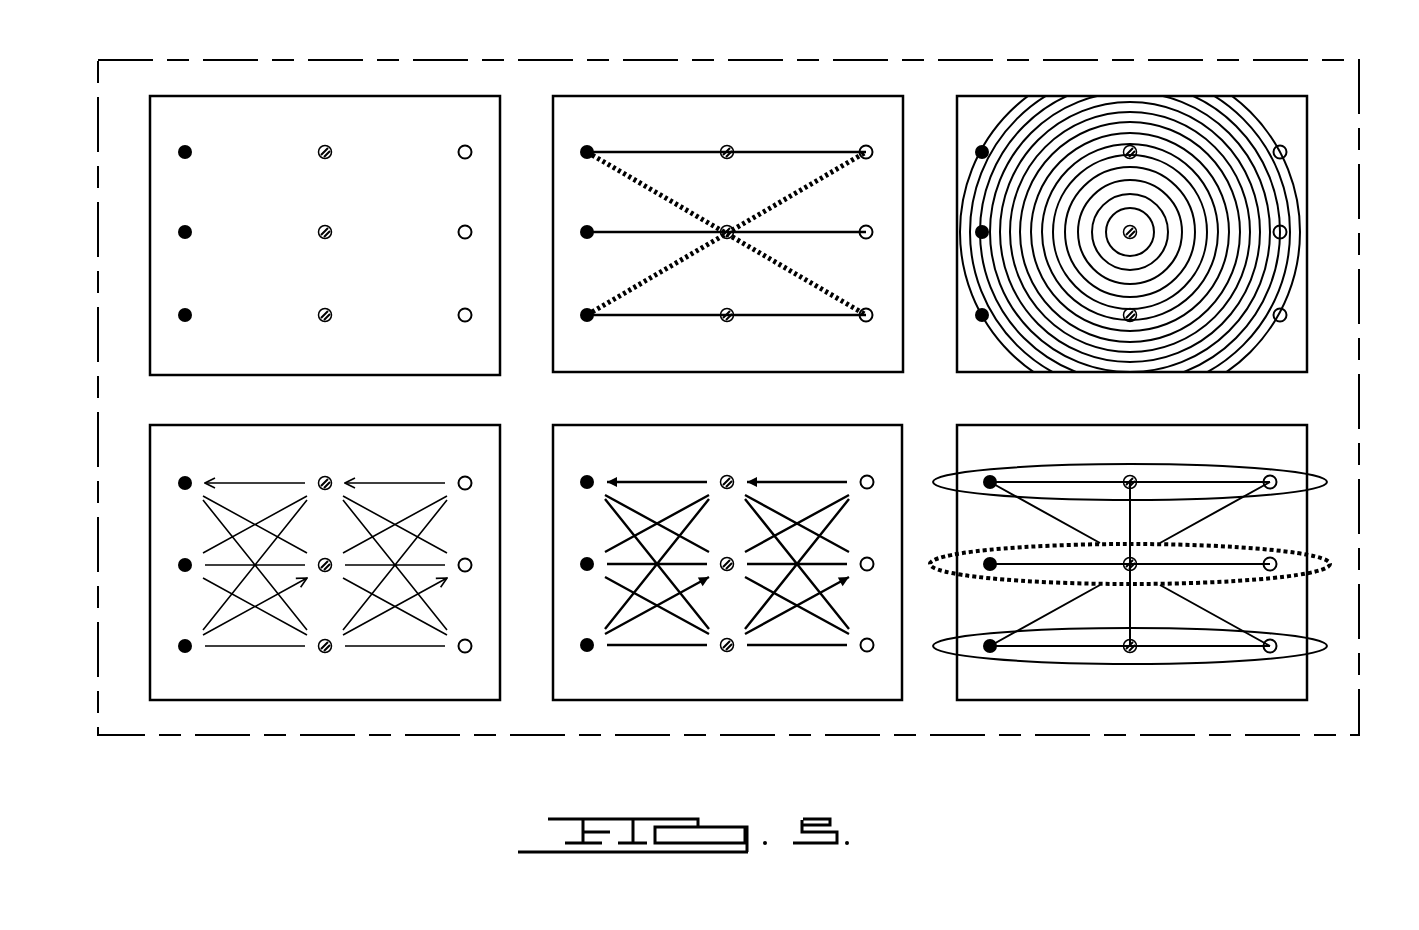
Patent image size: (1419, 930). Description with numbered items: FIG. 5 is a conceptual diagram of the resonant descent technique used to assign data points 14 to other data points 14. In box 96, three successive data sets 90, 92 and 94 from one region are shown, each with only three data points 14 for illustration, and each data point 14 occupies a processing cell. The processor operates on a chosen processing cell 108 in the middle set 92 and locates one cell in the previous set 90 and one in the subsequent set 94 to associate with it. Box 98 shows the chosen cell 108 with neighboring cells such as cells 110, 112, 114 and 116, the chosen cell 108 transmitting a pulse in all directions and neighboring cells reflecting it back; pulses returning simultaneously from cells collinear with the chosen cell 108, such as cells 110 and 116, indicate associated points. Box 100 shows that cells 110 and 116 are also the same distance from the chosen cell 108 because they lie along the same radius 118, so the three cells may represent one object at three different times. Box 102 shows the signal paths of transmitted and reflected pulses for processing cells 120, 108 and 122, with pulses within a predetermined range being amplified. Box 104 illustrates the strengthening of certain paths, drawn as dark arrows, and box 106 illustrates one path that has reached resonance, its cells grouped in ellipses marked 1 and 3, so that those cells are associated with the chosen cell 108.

The node grouping ellipse 1 is at (1130, 562).
The node grouping ellipse (dashed) 3 is at (1130, 547).
The data point 14 is at (330, 226).
The first data set 90 is at (192, 141).
The middle data set 92 is at (326, 141).
The subsequent data set 94 is at (466, 141).
The box showing three successive data sets 96 is at (150, 303).
The connected network panel 98 is at (625, 96).
The box showing collinear equidistant cells 100 is at (1128, 96).
The box showing signal paths 102 is at (150, 533).
The box showing strengthened paths 104 is at (553, 446).
The box showing resonant path 106 is at (957, 446).
The chosen processing cell 108 is at (727, 225).
The processing cell 110 is at (588, 146).
The second input node 112 is at (590, 252).
The first output node 114 is at (867, 146).
The processing cell 116 is at (1365, 302).
The radius 118 is at (1250, 360).
The processing cell 120 is at (327, 475).
The processing cell 122 is at (328, 655).